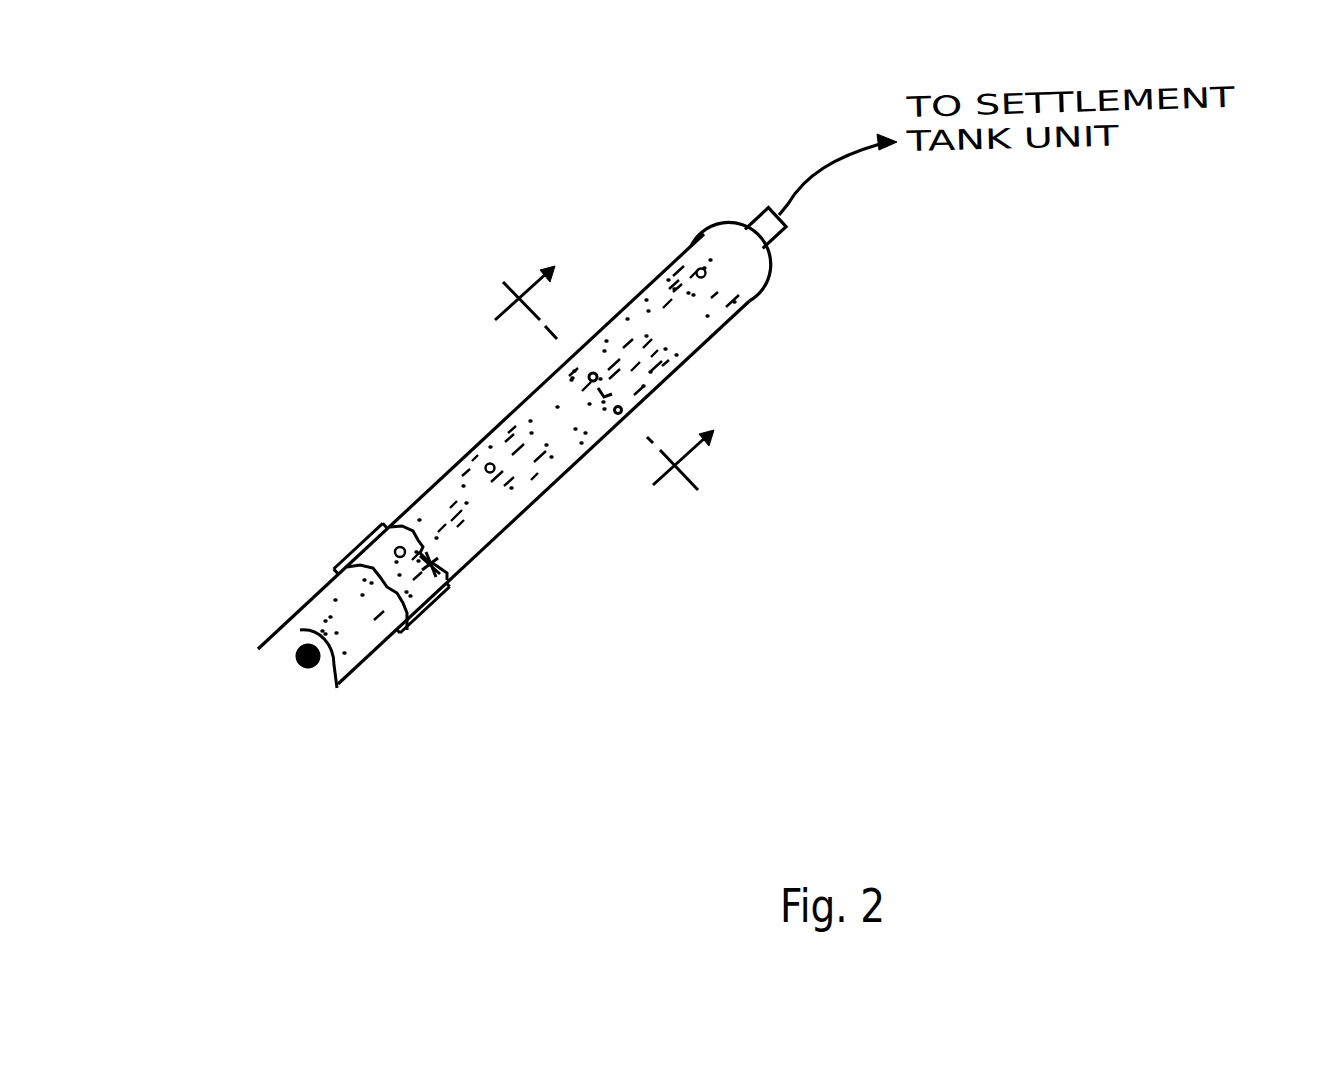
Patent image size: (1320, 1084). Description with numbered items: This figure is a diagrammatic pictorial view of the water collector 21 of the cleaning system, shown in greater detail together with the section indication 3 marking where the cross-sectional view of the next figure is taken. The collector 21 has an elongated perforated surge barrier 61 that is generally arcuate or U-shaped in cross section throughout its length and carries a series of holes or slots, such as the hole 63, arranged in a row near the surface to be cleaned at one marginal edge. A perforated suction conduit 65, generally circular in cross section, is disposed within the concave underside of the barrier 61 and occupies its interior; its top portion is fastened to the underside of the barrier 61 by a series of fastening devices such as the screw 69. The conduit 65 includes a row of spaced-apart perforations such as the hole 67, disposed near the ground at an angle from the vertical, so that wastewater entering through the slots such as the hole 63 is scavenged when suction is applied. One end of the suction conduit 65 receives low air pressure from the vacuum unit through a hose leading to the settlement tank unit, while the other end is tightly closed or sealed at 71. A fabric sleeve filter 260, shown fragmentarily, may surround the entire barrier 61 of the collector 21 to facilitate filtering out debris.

The collector 21 is at (523, 441).
The perforated surge barrier 61 is at (470, 441).
The hole 63 is at (622, 410).
The perforated suction conduit 65 is at (286, 637).
The hole 67 is at (620, 388).
The screw 69 is at (590, 374).
The sealed end 71 is at (304, 664).
The fabric sleeve filter 260 is at (436, 597).
The section line of FIG. 3 is at (602, 386).